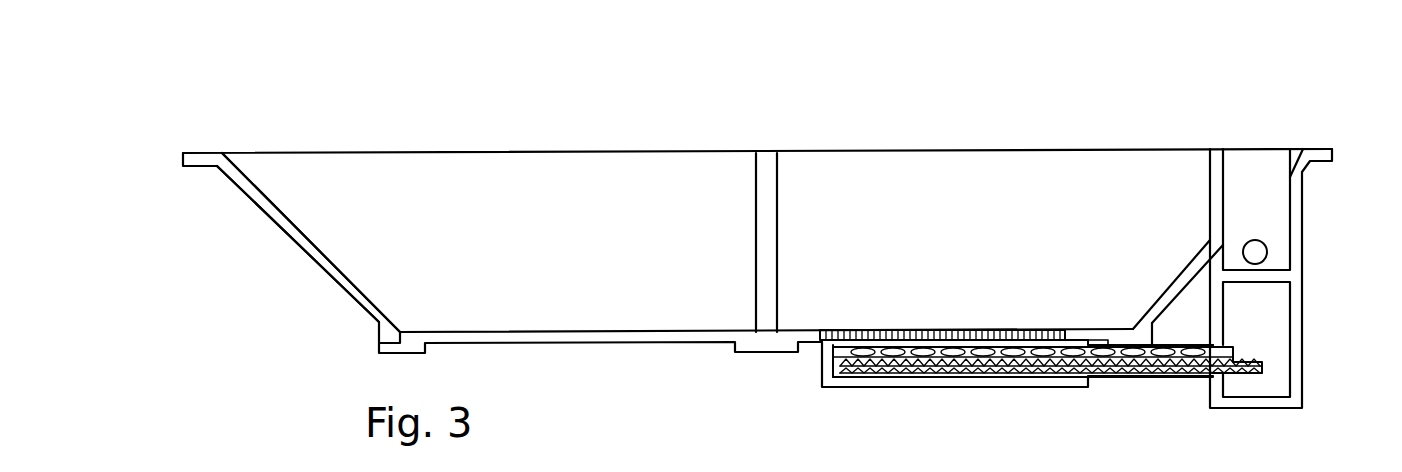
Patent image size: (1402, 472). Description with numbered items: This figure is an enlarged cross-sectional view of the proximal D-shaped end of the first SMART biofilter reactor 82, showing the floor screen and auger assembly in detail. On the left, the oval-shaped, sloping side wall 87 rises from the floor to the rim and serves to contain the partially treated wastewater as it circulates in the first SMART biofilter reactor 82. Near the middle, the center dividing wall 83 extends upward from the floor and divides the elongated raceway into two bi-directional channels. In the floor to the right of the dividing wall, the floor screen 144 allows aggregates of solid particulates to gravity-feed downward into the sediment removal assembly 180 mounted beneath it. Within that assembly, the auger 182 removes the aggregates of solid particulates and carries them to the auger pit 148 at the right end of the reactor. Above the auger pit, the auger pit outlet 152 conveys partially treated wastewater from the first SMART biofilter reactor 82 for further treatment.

The first SMART biofilter reactor 82 is at (370, 130).
The center dividing wall 83 is at (755, 192).
The sloping side wall 87 is at (299, 242).
The floor screen 144 is at (910, 328).
The auger pit 148 is at (1255, 317).
The auger pit outlet 152 is at (1263, 243).
The sediment removal assembly 180 is at (1105, 393).
The auger 182 is at (1247, 360).